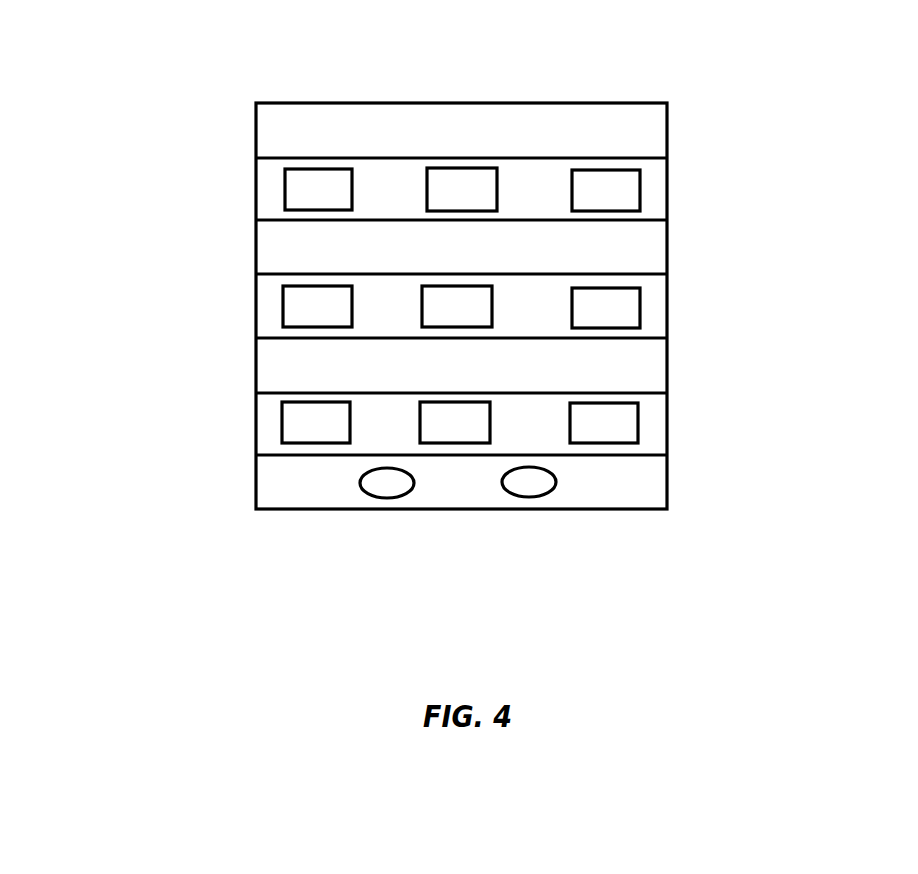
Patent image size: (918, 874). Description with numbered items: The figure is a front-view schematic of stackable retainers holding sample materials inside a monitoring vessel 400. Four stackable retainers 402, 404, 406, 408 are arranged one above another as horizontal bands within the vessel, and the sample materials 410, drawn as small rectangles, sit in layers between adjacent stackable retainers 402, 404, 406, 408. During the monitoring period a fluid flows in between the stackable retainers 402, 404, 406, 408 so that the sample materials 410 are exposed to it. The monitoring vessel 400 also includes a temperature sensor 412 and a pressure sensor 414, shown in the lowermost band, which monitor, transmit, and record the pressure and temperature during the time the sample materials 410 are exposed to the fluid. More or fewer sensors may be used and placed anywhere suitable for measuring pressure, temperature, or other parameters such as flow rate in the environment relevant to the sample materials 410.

The monitoring vessel 400 is at (347, 259).
The stackable retainer 402 is at (650, 145).
The stackable retainer 404 is at (650, 247).
The stackable retainer 406 is at (648, 372).
The stackable retainer 408 is at (647, 485).
The sample materials 410 is at (285, 188).
The temperature sensor 412 is at (360, 483).
The pressure sensor 414 is at (502, 485).